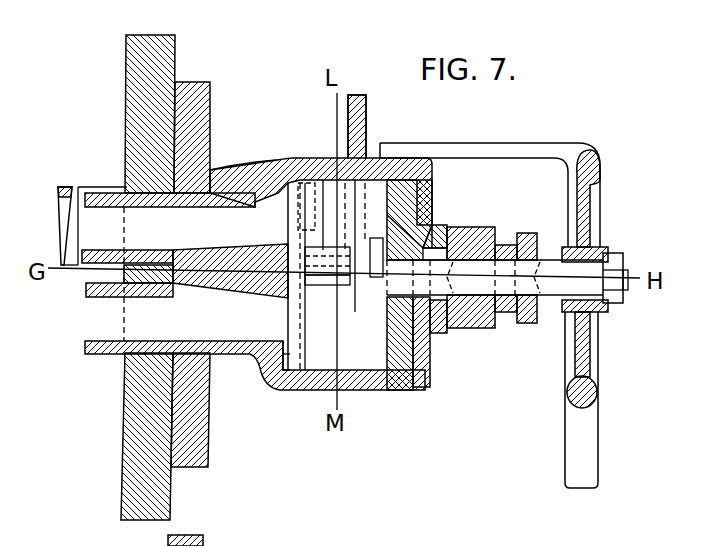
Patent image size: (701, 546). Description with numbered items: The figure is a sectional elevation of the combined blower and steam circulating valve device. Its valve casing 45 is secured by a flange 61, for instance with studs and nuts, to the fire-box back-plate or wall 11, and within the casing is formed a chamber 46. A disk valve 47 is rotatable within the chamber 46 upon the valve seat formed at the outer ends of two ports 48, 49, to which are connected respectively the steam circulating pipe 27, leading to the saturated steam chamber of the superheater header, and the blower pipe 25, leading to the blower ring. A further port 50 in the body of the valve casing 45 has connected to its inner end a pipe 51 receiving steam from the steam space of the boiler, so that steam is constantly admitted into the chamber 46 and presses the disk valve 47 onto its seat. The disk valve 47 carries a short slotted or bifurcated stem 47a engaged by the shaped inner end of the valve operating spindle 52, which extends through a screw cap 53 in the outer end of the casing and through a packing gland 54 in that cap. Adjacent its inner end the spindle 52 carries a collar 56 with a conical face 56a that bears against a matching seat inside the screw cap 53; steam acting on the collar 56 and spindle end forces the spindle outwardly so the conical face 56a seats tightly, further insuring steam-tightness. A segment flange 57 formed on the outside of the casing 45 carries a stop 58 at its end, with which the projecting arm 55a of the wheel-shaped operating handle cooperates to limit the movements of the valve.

The fire-box back-plate or wall 11 is at (140, 440).
The blower pipe 25 is at (103, 355).
The steam circulating pipe 27 is at (185, 222).
The valve casing 45 is at (279, 390).
The chamber 46 is at (345, 343).
The disk valve 47 is at (293, 343).
The slotted or bifurcated stem 47a is at (310, 340).
The port 48 is at (246, 153).
The port 49 is at (236, 323).
The port 50 is at (232, 187).
The pipe 51 is at (79, 187).
The valve operating spindle 52 is at (482, 288).
The screw cap 53 is at (413, 365).
The packing gland 54 is at (510, 314).
The projecting arm 55a is at (455, 152).
The collar 56 is at (381, 390).
The conical face 56a is at (446, 223).
The segment flange 57 is at (367, 106).
The projection or stop 58 is at (436, 197).
The flange 61 is at (193, 445).